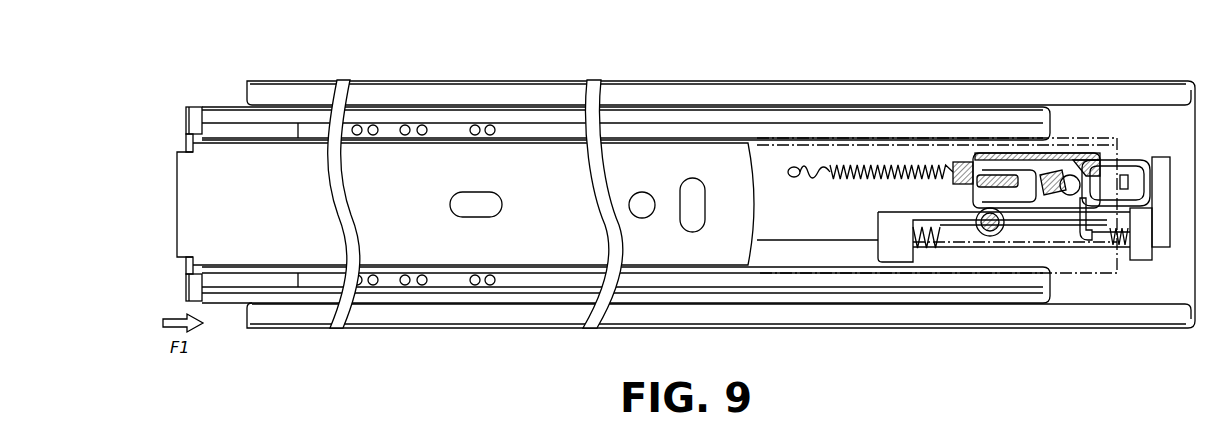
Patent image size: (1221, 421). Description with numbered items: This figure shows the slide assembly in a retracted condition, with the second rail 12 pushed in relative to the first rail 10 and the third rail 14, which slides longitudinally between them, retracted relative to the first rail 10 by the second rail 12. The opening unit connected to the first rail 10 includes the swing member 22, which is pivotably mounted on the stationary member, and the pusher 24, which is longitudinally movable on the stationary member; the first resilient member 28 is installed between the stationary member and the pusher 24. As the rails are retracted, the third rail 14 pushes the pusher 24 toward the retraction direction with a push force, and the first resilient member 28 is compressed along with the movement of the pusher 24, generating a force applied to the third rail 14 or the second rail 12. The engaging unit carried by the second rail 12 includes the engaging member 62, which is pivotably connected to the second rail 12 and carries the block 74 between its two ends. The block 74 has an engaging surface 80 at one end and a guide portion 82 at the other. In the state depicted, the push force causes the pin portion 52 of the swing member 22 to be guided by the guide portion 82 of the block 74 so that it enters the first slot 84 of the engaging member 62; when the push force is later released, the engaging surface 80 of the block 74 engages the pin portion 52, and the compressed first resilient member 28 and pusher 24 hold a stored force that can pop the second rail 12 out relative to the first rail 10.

The first rail 10 is at (1153, 285).
The second rail 12 is at (720, 238).
The third rail 14 is at (820, 282).
The swing member 22 is at (1132, 173).
The pusher 24 is at (897, 237).
The first resilient member 28 is at (935, 240).
The pin portion 52 is at (1070, 180).
The engaging member 62 is at (984, 238).
The block 74 is at (1060, 190).
The engaging surface 80 is at (1018, 178).
The guide portion 82 is at (1050, 177).
The first slot 84 is at (1003, 190).